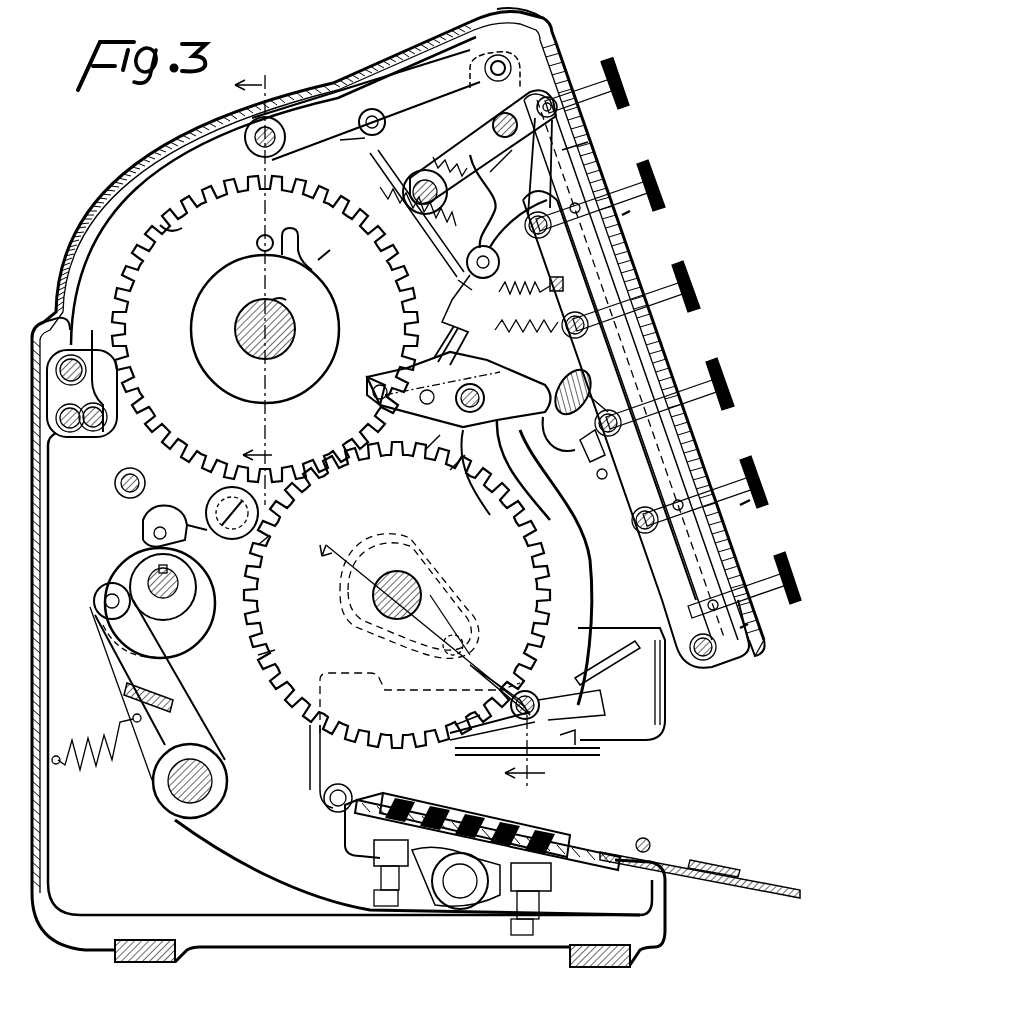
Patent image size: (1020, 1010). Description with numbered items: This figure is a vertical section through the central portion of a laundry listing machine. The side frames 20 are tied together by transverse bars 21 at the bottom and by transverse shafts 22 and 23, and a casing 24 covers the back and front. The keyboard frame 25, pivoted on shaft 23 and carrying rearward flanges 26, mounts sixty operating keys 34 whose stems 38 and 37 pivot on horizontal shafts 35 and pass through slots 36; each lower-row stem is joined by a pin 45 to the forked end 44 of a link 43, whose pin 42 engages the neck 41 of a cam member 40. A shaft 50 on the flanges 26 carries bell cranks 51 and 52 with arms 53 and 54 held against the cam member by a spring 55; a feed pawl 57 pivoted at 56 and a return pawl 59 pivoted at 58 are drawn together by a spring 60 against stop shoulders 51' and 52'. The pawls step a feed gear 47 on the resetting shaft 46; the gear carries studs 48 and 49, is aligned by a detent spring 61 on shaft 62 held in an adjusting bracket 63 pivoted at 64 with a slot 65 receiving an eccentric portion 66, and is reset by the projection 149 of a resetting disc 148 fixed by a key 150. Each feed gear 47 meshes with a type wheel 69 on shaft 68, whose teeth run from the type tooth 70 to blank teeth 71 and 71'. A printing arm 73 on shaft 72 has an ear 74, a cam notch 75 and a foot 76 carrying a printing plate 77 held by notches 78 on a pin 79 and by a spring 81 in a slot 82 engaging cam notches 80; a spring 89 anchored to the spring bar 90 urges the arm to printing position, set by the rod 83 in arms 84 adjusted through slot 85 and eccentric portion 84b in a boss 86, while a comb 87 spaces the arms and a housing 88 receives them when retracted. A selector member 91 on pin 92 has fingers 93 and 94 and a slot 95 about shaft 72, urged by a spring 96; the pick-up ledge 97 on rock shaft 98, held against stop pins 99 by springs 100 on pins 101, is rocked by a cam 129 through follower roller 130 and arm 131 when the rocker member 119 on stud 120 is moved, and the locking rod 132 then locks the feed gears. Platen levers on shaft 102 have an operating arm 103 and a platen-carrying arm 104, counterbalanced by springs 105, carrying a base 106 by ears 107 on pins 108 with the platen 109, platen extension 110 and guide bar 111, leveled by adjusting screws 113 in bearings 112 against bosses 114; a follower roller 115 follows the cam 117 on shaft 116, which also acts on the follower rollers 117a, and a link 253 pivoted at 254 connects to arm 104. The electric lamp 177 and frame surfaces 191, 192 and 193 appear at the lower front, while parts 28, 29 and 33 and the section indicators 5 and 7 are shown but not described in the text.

The side frames 20 is at (198, 158).
The transverse bars 21 is at (170, 962).
The transverse shaft 22 is at (258, 122).
The transverse shaft 23 is at (720, 672).
The casing 24 is at (128, 172).
The keyboard frame 25 is at (646, 268).
The rearwardly directed flanges 26 is at (640, 547).
The pivot 28 is at (495, 60).
The corner 29 is at (528, 26).
The bracket 33 is at (472, 72).
The operating keys 34 is at (634, 98).
The horizontal shafts 35 is at (526, 98).
The slots 36 is at (610, 156).
The key stems 37 is at (654, 183).
The key stems 38 is at (606, 68).
The cam member 40 is at (485, 208).
The neck 41 is at (526, 160).
The pin 42 is at (583, 118).
The link 43 is at (592, 142).
The forked end 44 is at (588, 186).
The pin 45 is at (628, 216).
The resetting shaft 46 is at (238, 324).
The feed gear 47 is at (170, 224).
The stud 48 is at (257, 243).
The stud 49 is at (372, 392).
The shaft 50 is at (410, 178).
The bell crank 51 is at (423, 166).
The stop shoulder 51' is at (341, 153).
The bell crank 52 is at (417, 213).
The stop shoulder 52' is at (443, 280).
The arm 53 is at (460, 118).
The arm 54 is at (503, 174).
The spring 55 is at (496, 128).
The pivot 56 is at (375, 113).
The feed pawl 57 is at (345, 78).
The pivot 58 is at (499, 258).
The return pawl 59 is at (470, 292).
The spring 60 is at (320, 258).
The detent spring 61 is at (118, 358).
The transverse shaft 62 is at (106, 430).
The adjusting bracket 63 is at (120, 392).
The pivot 64 is at (80, 440).
The elongated slot 65 is at (100, 358).
The eccentric portion 66 is at (56, 318).
The shaft 68 is at (410, 575).
The type wheel 69 is at (258, 657).
The tooth 70 is at (425, 750).
The blank tooth 71 is at (407, 766).
The blank teeth 71' is at (365, 760).
The transverse shaft 72 is at (460, 472).
The printing arm 73 is at (586, 586).
The ear 74 is at (432, 450).
The cam notch 75 is at (550, 748).
The foot 76 is at (515, 744).
The printing plate 77 is at (520, 762).
The notches 78 is at (465, 762).
The pin 79 is at (456, 722).
The cam notches 80 is at (565, 742).
The spring 81 is at (578, 718).
The slot 82 is at (545, 710).
The transverse rod 83 is at (512, 676).
The arm 84 is at (508, 640).
The eccentric portion 84b is at (445, 625).
The oblong slot 85 is at (443, 645).
The boss 86 is at (465, 600).
The comb 87 is at (614, 666).
The housing 88 is at (667, 716).
The spring 89 is at (524, 275).
The spring bar 90 is at (554, 277).
The selector member 91 is at (478, 496).
The pin 92 is at (420, 412).
The finger 93 is at (365, 408).
The finger 94 is at (546, 492).
The oblong slot 95 is at (488, 378).
The spring 96 is at (460, 340).
The pick-up ledge 97 is at (550, 442).
The rock shaft 98 is at (716, 374).
The stop pins 99 is at (600, 408).
The springs 100 is at (604, 456).
The pins 101 is at (606, 476).
The shaft 102 is at (175, 792).
The operating arm 103 is at (205, 725).
The platen-carrying arm 104 is at (232, 836).
The springs 105 is at (92, 732).
The base 106 is at (585, 866).
The ears 107 is at (495, 905).
The pins 108 is at (455, 905).
The platen 109 is at (545, 830).
The platen extension 110 is at (700, 863).
The bar 111 is at (712, 864).
The bearings 112 is at (379, 872).
The adjusting screws 113 is at (374, 905).
The bosses 114 is at (372, 846).
The follower roller 115 is at (100, 612).
The shaft 116 is at (148, 580).
The cam 117 is at (200, 625).
The follower rollers 117a is at (185, 537).
The rocker member 119 is at (140, 518).
The stud 120 is at (262, 542).
The cam 129 is at (566, 490).
The follower roller 130 is at (526, 325).
The arm 131 is at (568, 379).
The locking rod 132 is at (116, 487).
The resetting disc 148 is at (333, 322).
The projection 149 is at (298, 250).
The key 150 is at (278, 306).
The electric lamp 177 is at (770, 652).
The horizontal surface 191 is at (640, 622).
The vertical surface 192 is at (598, 622).
The surface 193 is at (400, 696).
The link 253 is at (310, 768).
The pivotal connection 254 is at (324, 795).
The section line 5 is at (258, 282).
The section line 7 is at (432, 657).